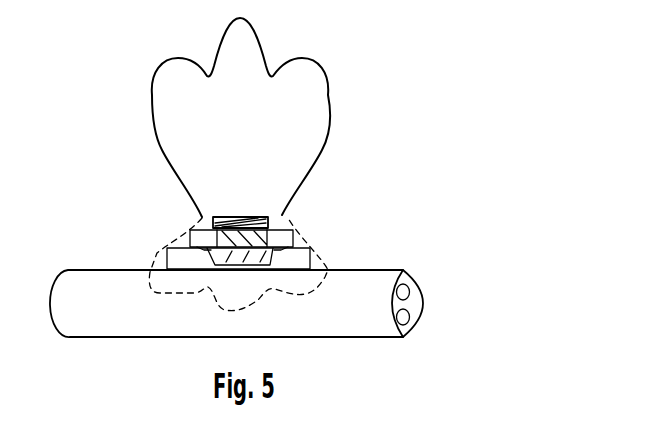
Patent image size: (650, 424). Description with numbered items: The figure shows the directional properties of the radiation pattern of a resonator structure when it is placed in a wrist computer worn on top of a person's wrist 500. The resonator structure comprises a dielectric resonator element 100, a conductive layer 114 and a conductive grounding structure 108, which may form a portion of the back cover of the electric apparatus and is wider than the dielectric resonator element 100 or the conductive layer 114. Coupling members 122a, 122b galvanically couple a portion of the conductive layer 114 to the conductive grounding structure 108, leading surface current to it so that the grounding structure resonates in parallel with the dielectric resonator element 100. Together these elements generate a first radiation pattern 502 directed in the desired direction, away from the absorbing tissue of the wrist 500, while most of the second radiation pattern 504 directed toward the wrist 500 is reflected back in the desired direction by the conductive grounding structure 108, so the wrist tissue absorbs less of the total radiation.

The dielectric resonator element 100 is at (283, 220).
The conductive grounding structure 108 is at (311, 251).
The conductive layer 114 is at (285, 238).
The coupling member 122a is at (170, 247).
The coupling member 122b is at (285, 248).
The wrist 500 is at (393, 270).
The first radiation pattern 502 is at (152, 112).
The second radiation pattern 504 is at (155, 262).